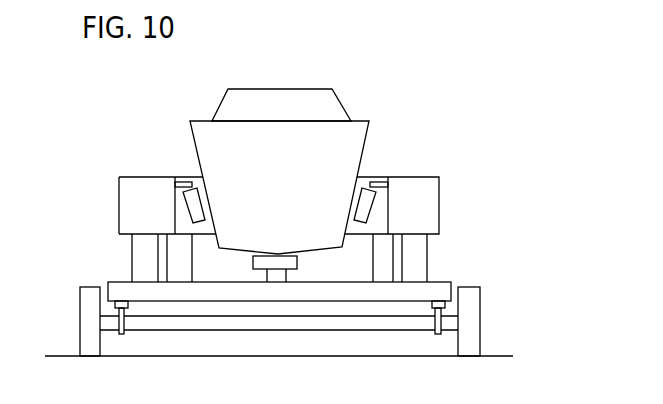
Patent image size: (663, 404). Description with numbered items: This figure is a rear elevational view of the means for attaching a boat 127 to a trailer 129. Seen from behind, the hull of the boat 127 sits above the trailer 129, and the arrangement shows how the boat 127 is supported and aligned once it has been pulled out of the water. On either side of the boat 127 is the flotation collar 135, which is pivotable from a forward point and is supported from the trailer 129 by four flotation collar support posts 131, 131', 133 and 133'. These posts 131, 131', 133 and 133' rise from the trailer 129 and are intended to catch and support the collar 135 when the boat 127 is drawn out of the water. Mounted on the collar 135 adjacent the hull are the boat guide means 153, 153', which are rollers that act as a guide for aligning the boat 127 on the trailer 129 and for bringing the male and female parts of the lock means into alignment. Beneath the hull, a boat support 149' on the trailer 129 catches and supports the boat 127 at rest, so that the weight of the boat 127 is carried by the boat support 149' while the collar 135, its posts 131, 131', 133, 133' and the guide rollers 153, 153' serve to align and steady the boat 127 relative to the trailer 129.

The boat 127 is at (288, 132).
The trailer 129 is at (115, 292).
The flotation collar support post 131 is at (462, 251).
The flotation collar support post 131' is at (95, 250).
The flotation collar support post 133 is at (437, 235).
The flotation collar support post 133' is at (108, 229).
The flotation collar 135 is at (143, 190).
The boat support 149' is at (288, 320).
The boat guide means 153 is at (390, 172).
The boat guide means 153' is at (177, 171).